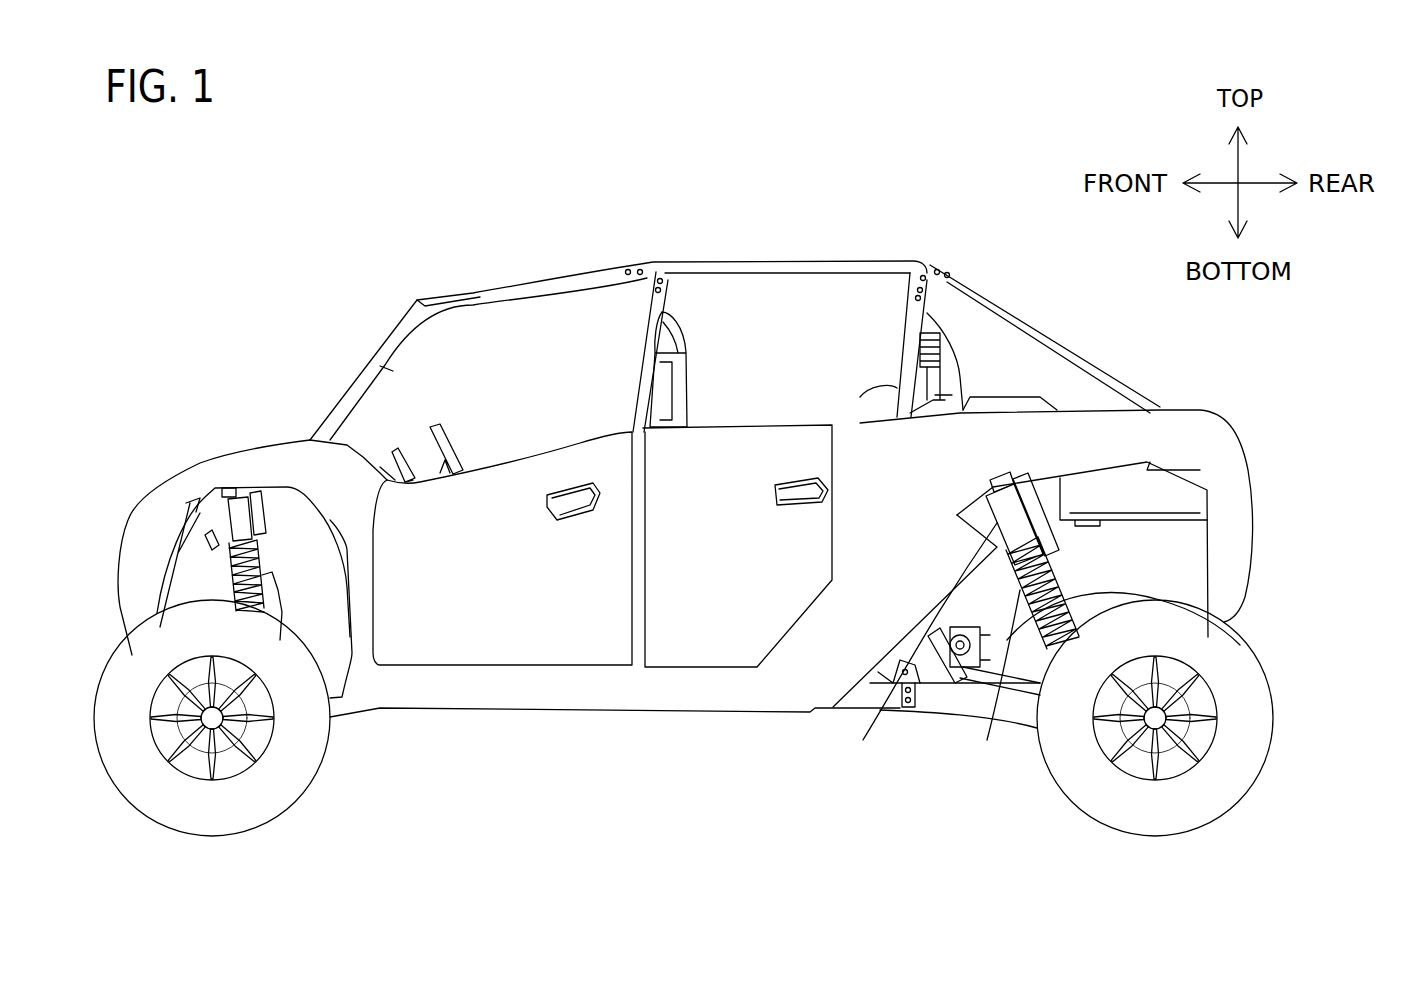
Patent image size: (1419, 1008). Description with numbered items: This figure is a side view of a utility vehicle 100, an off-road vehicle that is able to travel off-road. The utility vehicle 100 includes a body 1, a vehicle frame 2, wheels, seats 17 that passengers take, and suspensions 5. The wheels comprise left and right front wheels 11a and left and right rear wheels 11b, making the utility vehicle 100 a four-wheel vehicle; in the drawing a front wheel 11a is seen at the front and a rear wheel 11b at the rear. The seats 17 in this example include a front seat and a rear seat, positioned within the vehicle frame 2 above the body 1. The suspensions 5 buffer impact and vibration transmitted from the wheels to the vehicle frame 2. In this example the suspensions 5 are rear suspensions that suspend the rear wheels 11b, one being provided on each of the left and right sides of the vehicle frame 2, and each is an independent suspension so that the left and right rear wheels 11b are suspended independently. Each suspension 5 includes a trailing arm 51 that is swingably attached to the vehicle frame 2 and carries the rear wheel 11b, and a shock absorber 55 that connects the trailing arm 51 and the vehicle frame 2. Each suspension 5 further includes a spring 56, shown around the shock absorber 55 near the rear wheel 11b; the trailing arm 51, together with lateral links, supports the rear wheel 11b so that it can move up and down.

The utility vehicle 100 is at (394, 189).
The body 1 is at (234, 452).
The vehicle frame 2 is at (594, 262).
The seats 17 is at (699, 386).
The suspensions 5 is at (889, 723).
The shock absorber 55 is at (985, 527).
The trailing arm 51 is at (990, 718).
The spring 56 is at (1012, 588).
The front wheels 11a is at (310, 788).
The rear wheels 11b is at (1253, 783).